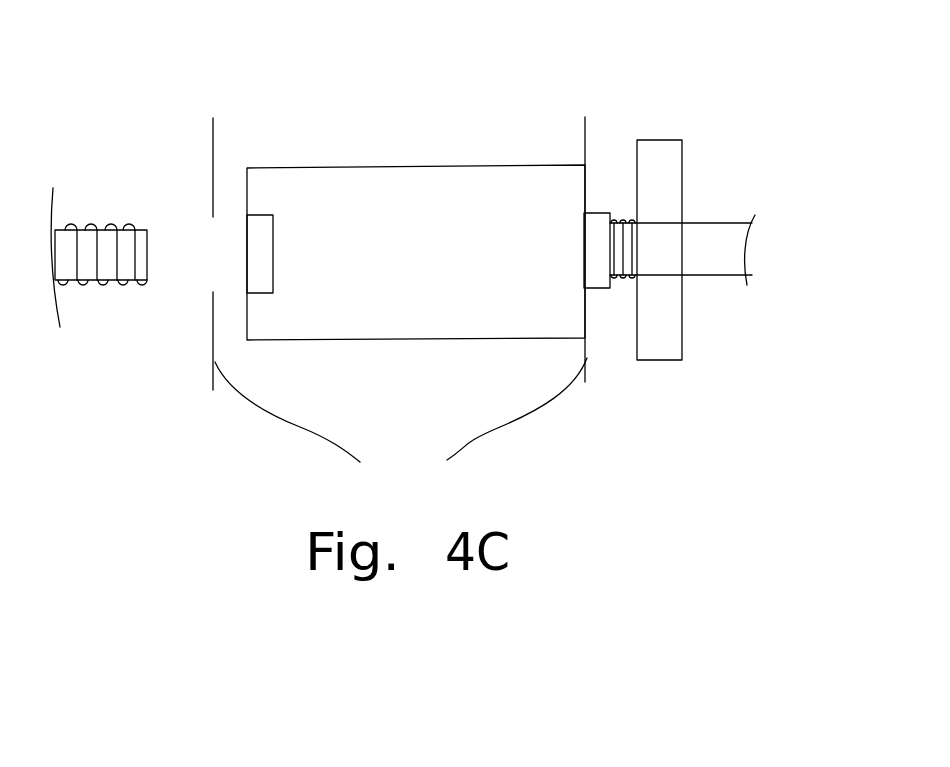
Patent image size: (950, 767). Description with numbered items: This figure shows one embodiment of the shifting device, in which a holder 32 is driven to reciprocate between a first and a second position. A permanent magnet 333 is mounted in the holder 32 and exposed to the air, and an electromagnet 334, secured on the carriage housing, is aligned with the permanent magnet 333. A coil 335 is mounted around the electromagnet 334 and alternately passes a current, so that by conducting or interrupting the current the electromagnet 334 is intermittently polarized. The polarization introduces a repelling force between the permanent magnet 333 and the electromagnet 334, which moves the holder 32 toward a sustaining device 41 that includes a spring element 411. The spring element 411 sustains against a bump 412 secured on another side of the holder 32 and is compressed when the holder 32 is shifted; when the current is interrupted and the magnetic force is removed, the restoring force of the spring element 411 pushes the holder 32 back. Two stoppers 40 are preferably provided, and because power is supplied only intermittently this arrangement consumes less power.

The holder 32 is at (400, 193).
The permanent magnet 333 is at (258, 247).
The electromagnet 334 is at (83, 248).
The coil 335 is at (78, 268).
The stoppers 40 is at (400, 299).
The sustaining device 41 is at (605, 172).
The spring element 411 is at (627, 223).
The bump 412 is at (598, 277).